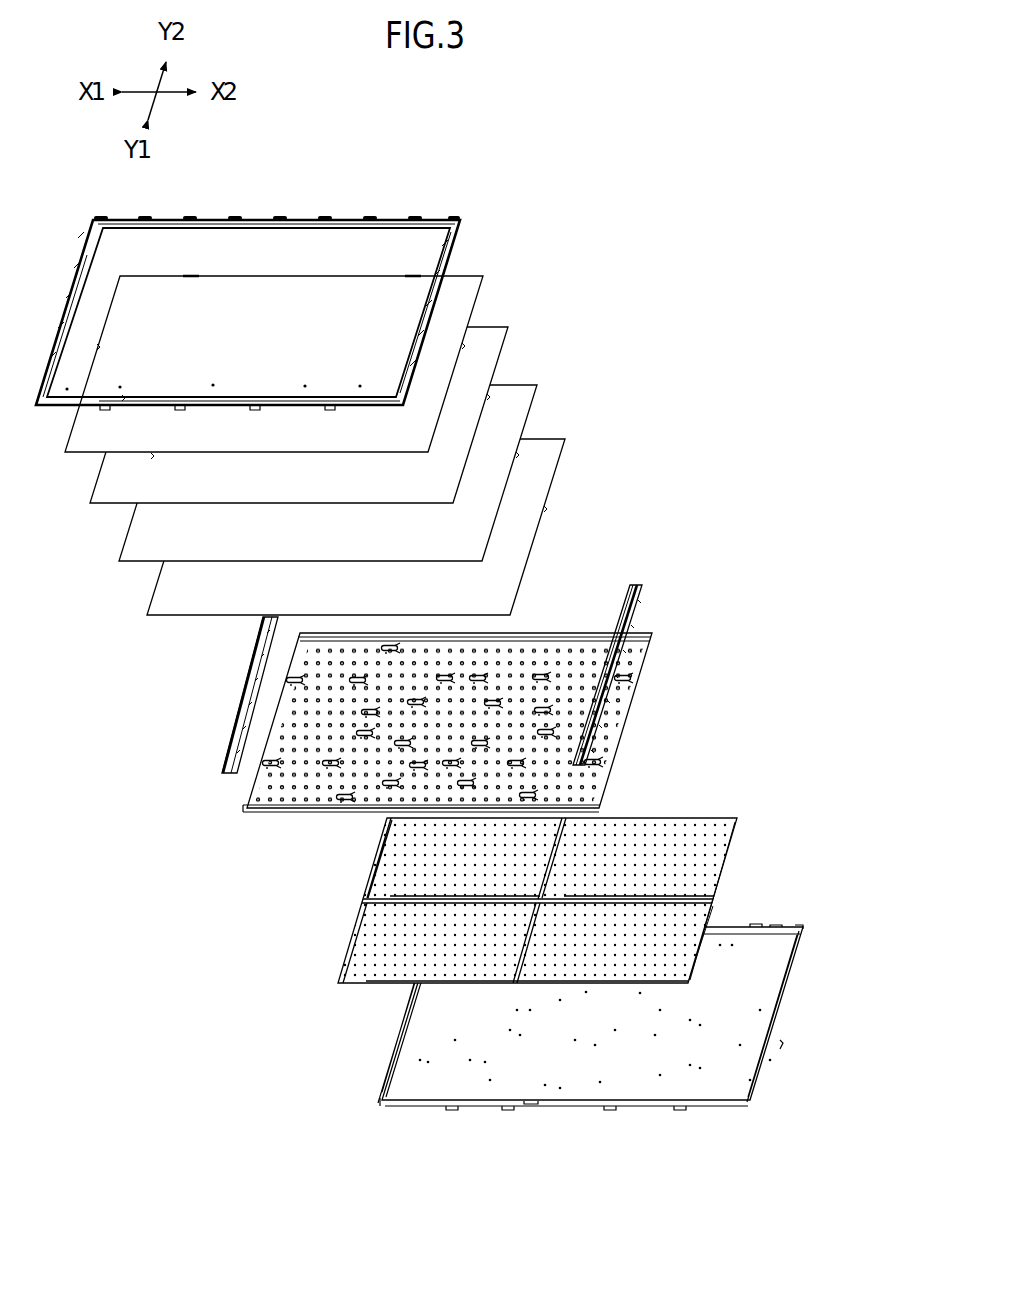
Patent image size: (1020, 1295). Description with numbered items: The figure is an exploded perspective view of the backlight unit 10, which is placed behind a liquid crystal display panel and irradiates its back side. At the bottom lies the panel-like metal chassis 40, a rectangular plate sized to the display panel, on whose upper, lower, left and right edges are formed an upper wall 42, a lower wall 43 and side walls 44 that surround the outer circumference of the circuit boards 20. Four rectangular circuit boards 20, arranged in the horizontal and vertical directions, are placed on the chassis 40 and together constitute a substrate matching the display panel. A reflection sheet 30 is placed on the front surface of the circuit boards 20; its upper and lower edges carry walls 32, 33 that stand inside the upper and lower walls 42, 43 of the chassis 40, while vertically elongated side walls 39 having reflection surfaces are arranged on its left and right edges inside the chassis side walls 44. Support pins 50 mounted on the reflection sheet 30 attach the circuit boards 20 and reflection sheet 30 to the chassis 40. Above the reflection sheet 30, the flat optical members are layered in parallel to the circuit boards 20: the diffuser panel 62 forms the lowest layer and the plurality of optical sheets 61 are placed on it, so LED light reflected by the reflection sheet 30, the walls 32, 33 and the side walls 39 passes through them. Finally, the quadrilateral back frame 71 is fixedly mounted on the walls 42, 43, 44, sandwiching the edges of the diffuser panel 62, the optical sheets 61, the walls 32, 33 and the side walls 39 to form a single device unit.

The backlight unit 10 is at (622, 178).
The circuit board 20 is at (680, 822).
The reflection sheet 30 is at (478, 712).
The wall 32 is at (537, 640).
The wall 33 is at (293, 814).
The side wall 39 is at (255, 630).
The chassis 40 is at (570, 1020).
The upper wall 42 is at (763, 932).
The lower wall 43 is at (578, 1105).
The side wall 44 is at (390, 1075).
The support pin 50 is at (541, 676).
The optical sheet 61 is at (518, 393).
The diffuser panel 62 is at (560, 460).
The back frame 71 is at (428, 221).